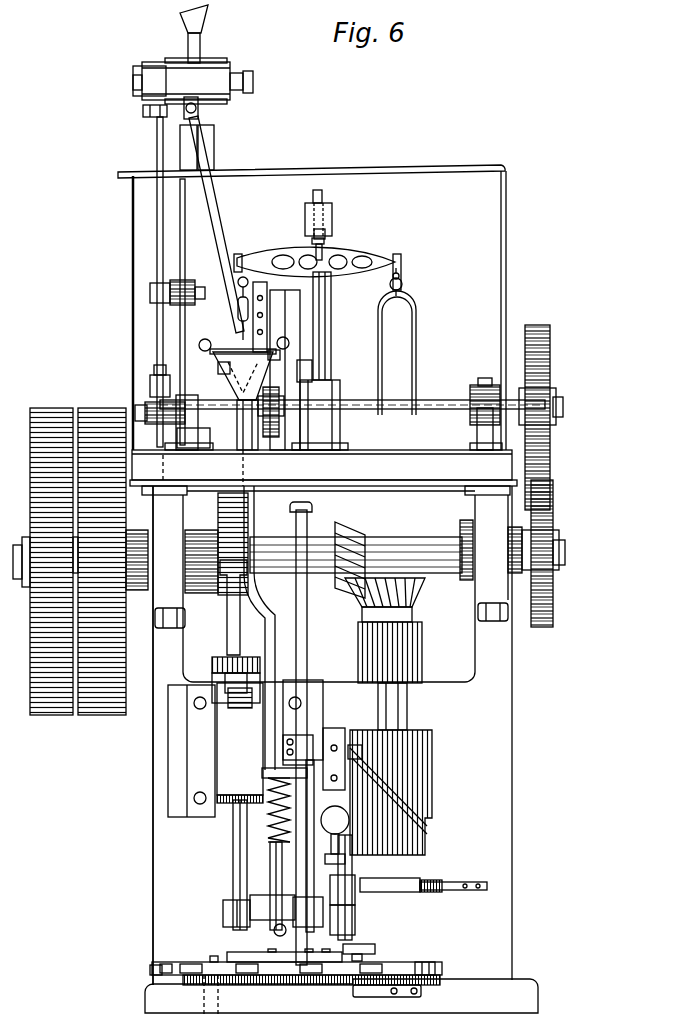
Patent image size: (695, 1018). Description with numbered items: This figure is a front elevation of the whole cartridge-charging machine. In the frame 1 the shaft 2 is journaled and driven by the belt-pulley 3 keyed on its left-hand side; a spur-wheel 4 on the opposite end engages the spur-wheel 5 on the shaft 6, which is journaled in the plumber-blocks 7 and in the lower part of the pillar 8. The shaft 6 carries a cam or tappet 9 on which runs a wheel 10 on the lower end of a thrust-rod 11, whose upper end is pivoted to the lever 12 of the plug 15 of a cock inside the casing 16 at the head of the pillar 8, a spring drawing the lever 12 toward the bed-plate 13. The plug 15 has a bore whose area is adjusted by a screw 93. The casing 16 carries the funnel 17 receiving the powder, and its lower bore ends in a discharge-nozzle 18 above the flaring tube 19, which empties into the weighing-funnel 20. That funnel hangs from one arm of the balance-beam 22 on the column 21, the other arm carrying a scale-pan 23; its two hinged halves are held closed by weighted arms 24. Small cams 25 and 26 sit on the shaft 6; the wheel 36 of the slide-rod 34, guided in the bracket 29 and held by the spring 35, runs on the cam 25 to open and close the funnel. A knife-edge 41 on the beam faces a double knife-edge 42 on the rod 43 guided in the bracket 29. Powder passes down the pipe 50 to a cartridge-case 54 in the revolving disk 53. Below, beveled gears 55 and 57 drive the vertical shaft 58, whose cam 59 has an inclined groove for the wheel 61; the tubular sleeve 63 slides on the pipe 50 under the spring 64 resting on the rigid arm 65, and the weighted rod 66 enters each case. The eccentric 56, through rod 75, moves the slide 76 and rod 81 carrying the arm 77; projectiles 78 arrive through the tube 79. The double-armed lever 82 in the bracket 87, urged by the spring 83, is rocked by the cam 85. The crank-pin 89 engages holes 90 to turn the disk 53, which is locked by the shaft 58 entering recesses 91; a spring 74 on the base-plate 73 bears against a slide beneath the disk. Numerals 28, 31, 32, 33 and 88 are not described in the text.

The frame 1 is at (152, 838).
The shaft 2 is at (276, 578).
The belt-pulley 3 is at (100, 708).
The spur-wheel 4 is at (548, 597).
The spur-wheel 5 is at (546, 357).
The shaft 6 is at (445, 411).
The plumber-blocks 7 is at (477, 426).
The pillar 8 is at (185, 235).
The cam or tappet 9 is at (166, 441).
The wheel 10 is at (158, 388).
The thrust-rod 11 is at (157, 224).
The lever 12 is at (143, 111).
The bed-plate 13 is at (405, 450).
The plug 15 is at (158, 66).
The casing 16 is at (216, 62).
The funnel 17 is at (205, 28).
The discharge-nozzle 18 is at (200, 113).
The tube 19 is at (218, 241).
The weighing-funnel 20 is at (266, 333).
The column 21 is at (331, 336).
The balance-beam 22 is at (351, 272).
The scale-pan 23 is at (418, 322).
The weighted arms 24 is at (280, 357).
The cam 25 is at (268, 432).
The cam 26 is at (300, 428).
The funnel 28 is at (235, 378).
The bracket 29 is at (305, 217).
The standard 31 is at (306, 285).
The bearing block 32 is at (306, 391).
The funnel insert 33 is at (229, 375).
The slide-rod 34 is at (268, 297).
The spring 35 is at (216, 383).
The wheel 36 is at (300, 378).
The knife-edge 41 is at (312, 241).
The double knife-edge 42 is at (326, 234).
The rod 43 is at (322, 205).
The pipe 50 is at (260, 470).
The revolving disk 53 is at (178, 964).
The cartridge-case 54 is at (350, 957).
The beveled-tooth wheel 55 is at (341, 521).
The eccentric 56 is at (218, 516).
The beveled-tooth wheel 57 is at (424, 600).
The vertical shaft 58 is at (407, 705).
The cam 59 is at (432, 771).
The wheel 61 is at (365, 756).
The tubular sleeve 63 is at (270, 863).
The spring 64 is at (268, 786).
The rigid arm 65 is at (264, 771).
The weighted rod 66 is at (345, 846).
The base-plate 73 is at (538, 997).
The spring 74 is at (355, 990).
The rod 75 is at (236, 613).
The slide 76 is at (218, 741).
The arm 77 is at (225, 906).
The projectiles 78 is at (292, 912).
The tube 79 is at (308, 598).
The rod 81 is at (233, 845).
The double-armed lever 82 is at (360, 898).
The spring 83 is at (475, 880).
The cam 85 is at (432, 890).
The bracket 87 is at (358, 908).
The rod 88 is at (353, 866).
The crank-pin 89 is at (435, 968).
The holes 90 is at (150, 970).
The recesses 91 is at (178, 975).
The screw 93 is at (249, 76).